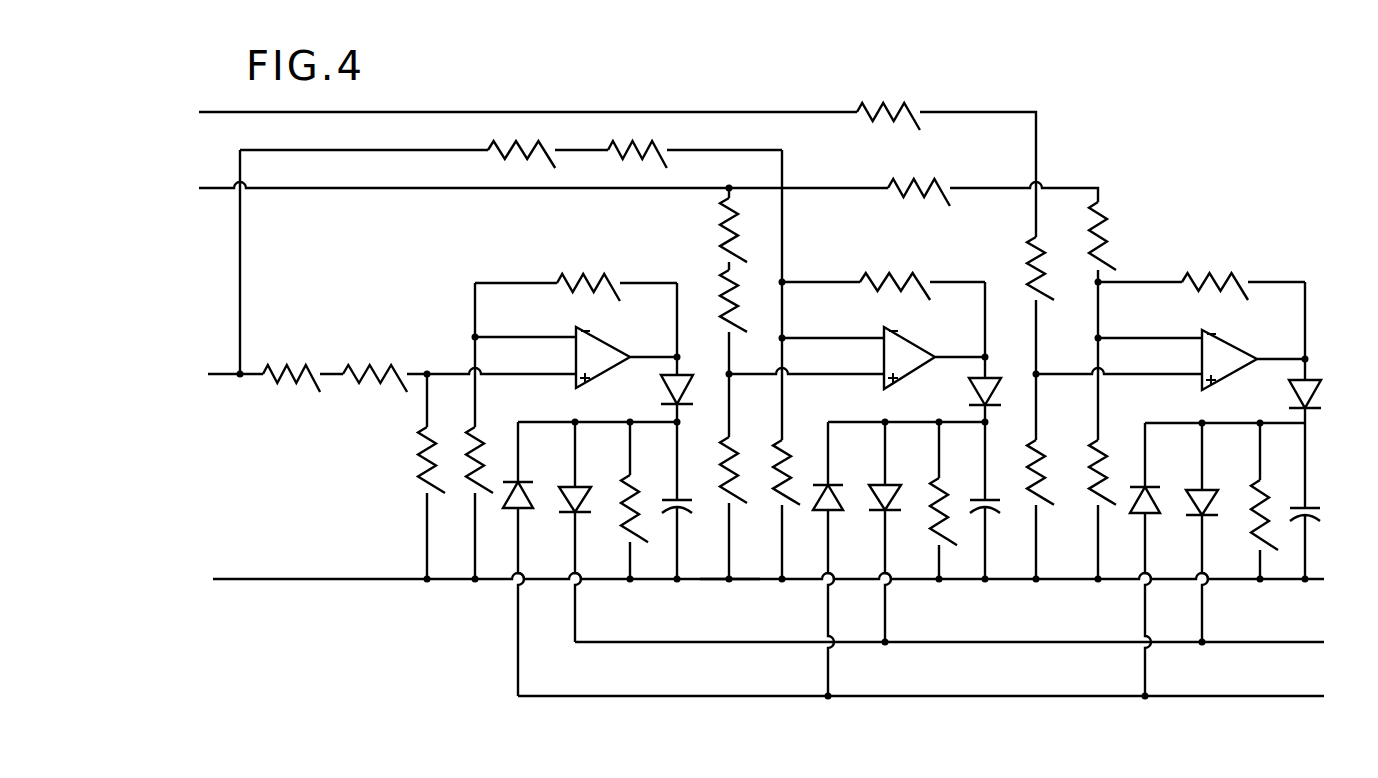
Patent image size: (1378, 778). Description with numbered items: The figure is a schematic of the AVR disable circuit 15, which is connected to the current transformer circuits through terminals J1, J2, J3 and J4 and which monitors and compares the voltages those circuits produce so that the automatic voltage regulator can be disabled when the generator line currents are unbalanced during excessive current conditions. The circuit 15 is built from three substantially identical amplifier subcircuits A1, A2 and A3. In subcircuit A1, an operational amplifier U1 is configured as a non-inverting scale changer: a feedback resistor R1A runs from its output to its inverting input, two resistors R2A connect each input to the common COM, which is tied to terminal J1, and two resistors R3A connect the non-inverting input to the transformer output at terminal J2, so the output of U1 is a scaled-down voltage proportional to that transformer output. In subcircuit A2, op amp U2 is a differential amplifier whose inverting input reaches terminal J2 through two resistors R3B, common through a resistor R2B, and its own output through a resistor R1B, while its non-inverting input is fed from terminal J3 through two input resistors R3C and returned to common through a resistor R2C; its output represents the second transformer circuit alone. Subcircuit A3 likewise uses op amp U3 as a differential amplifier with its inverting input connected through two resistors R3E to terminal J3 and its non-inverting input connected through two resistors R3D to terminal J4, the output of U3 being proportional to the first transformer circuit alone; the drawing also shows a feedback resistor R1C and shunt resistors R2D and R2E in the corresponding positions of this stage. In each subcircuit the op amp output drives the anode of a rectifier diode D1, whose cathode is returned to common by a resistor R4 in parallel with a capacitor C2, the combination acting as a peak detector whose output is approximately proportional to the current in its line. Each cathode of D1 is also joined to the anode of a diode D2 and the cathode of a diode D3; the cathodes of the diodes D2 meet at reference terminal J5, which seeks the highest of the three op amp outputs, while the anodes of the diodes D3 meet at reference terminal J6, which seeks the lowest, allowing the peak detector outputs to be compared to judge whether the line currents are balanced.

The AVR disable circuit 15 is at (346, 678).
The terminal J1 is at (768, 579).
The terminal J2 is at (371, 374).
The terminal J3 is at (627, 188).
The terminal J4 is at (596, 164).
The reference terminal J5 is at (970, 642).
The reference terminal J6 is at (942, 696).
The common COM is at (719, 582).
The amplifier subcircuit A1 is at (436, 266).
The amplifier subcircuit A2 is at (870, 248).
The amplifier subcircuit A3 is at (1212, 246).
The operational amplifier U1 is at (578, 357).
The op amp U2 is at (859, 358).
The op amp U3 is at (1172, 360).
The feedback resistor R1A is at (616, 270).
The resistor R1B is at (876, 274).
The feedback resistor R1C is at (1212, 282).
The resistors R2A is at (422, 474).
The resistor R2B is at (790, 446).
The resistor R2C is at (738, 444).
The resistor R2D is at (1040, 490).
The resistor R2E is at (1094, 462).
The resistors R3A is at (396, 382).
The resistors R3B is at (492, 148).
The input resistors R3C is at (728, 238).
The resistors R3D is at (912, 118).
The resistors R3E is at (940, 188).
The resistor R4 is at (648, 494).
The capacitor C2 is at (694, 500).
The rectifier diode D1 is at (715, 382).
The diode D2 is at (586, 500).
The diode D3 is at (528, 498).